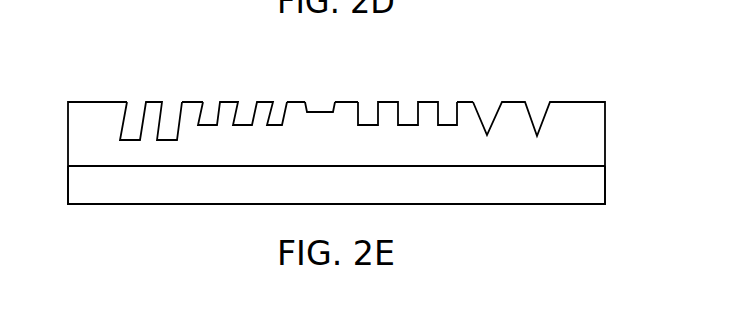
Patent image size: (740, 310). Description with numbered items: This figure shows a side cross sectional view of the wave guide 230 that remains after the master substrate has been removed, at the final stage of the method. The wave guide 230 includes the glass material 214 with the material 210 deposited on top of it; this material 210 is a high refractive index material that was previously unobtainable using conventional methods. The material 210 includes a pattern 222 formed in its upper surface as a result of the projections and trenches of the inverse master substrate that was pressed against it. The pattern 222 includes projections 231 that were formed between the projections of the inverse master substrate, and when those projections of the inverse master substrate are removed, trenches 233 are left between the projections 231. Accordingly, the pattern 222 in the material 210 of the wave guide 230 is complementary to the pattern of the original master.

The material 210 is at (606, 130).
The glass material 214 is at (606, 185).
The projections 231 is at (158, 101).
The trenches 233 is at (281, 103).
The pattern 222 is at (450, 103).
The wave guide 230 is at (642, 90).